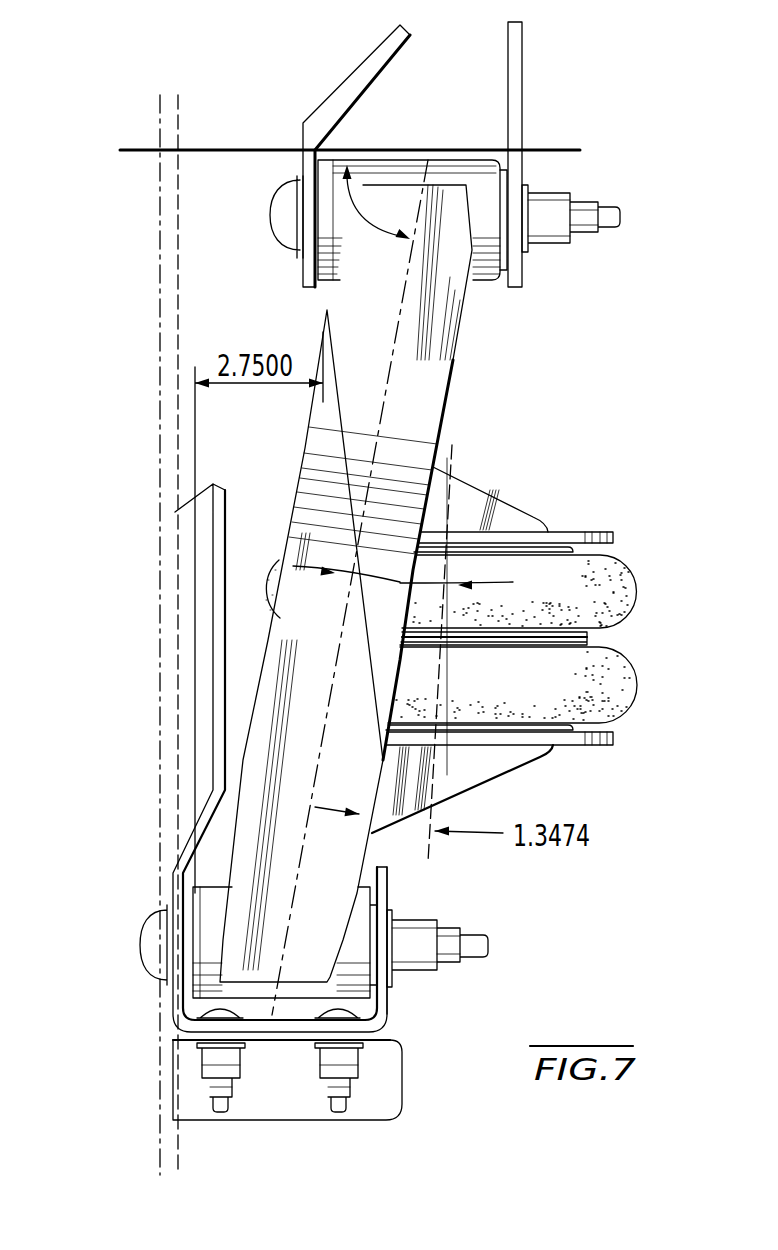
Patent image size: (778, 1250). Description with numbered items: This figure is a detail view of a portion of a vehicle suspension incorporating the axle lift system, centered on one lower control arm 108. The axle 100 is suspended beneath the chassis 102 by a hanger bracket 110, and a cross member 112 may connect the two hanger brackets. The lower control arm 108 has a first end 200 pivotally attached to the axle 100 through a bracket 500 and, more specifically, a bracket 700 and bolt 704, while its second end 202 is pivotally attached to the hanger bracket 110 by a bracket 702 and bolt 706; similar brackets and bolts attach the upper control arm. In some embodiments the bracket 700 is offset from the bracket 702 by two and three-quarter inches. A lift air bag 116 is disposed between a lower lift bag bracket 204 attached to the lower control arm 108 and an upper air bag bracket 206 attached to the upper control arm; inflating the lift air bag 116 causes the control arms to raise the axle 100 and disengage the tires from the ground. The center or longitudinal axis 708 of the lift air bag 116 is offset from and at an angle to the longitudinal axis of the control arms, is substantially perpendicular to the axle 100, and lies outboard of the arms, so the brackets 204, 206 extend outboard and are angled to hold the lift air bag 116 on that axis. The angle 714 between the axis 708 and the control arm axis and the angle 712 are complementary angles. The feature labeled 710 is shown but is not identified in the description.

The axle 100 is at (223, 151).
The chassis 102 is at (178, 257).
The lower control arm 108 is at (278, 663).
The hanger bracket 110 is at (383, 1017).
The cross member 112 is at (190, 1037).
The lift air bag 116 is at (622, 677).
The first end 200 is at (485, 262).
The second end 202 is at (357, 978).
The lower lift bag bracket 204 is at (520, 757).
The upper air bag bracket 206 is at (587, 537).
The bracket 500 is at (303, 168).
The bracket 700 is at (517, 265).
The bracket 702 is at (387, 890).
The bolt 704 is at (563, 227).
The bolt 706 is at (413, 933).
The longitudinal axis of lift air bag 708 is at (450, 490).
The bushing pad 710 is at (337, 607).
The angle 712 is at (358, 212).
The angle 714 is at (400, 582).